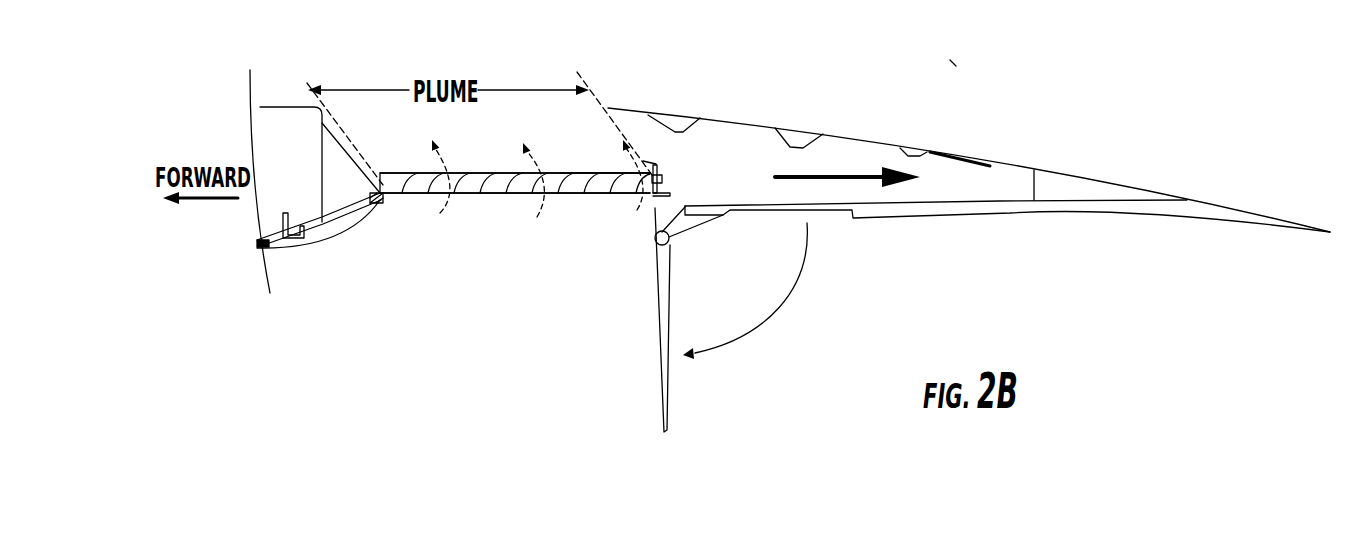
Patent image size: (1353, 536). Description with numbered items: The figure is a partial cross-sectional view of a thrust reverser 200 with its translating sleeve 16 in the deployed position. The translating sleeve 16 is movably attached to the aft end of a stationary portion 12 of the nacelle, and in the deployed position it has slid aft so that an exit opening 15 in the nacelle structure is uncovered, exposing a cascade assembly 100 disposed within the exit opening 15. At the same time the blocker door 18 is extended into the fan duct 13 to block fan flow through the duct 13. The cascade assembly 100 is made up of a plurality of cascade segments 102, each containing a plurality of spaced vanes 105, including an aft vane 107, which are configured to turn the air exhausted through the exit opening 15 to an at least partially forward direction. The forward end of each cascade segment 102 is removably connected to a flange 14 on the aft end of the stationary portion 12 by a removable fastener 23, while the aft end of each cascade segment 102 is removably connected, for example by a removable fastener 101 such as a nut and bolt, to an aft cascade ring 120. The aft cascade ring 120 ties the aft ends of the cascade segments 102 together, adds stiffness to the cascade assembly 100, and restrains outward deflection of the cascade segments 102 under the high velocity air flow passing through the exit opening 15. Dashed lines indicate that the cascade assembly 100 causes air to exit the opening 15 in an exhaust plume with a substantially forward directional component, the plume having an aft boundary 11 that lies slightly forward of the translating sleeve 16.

The aft boundary 11 is at (597, 93).
The stationary portion 12 is at (292, 180).
The fan duct 13 is at (552, 310).
The flange 14 is at (381, 200).
The exit opening 15 is at (502, 126).
The translating sleeve 16 is at (1018, 165).
The blocker door 18 is at (660, 317).
The removable fastener 23 is at (380, 200).
The cascade assembly 100 is at (495, 158).
The removable fastener 101 is at (665, 178).
The cascade segment 102 is at (587, 170).
The vane 105 is at (537, 183).
The aft vane 107 is at (627, 183).
The aft cascade ring 120 is at (652, 162).
The thrust reverser 200 is at (953, 63).